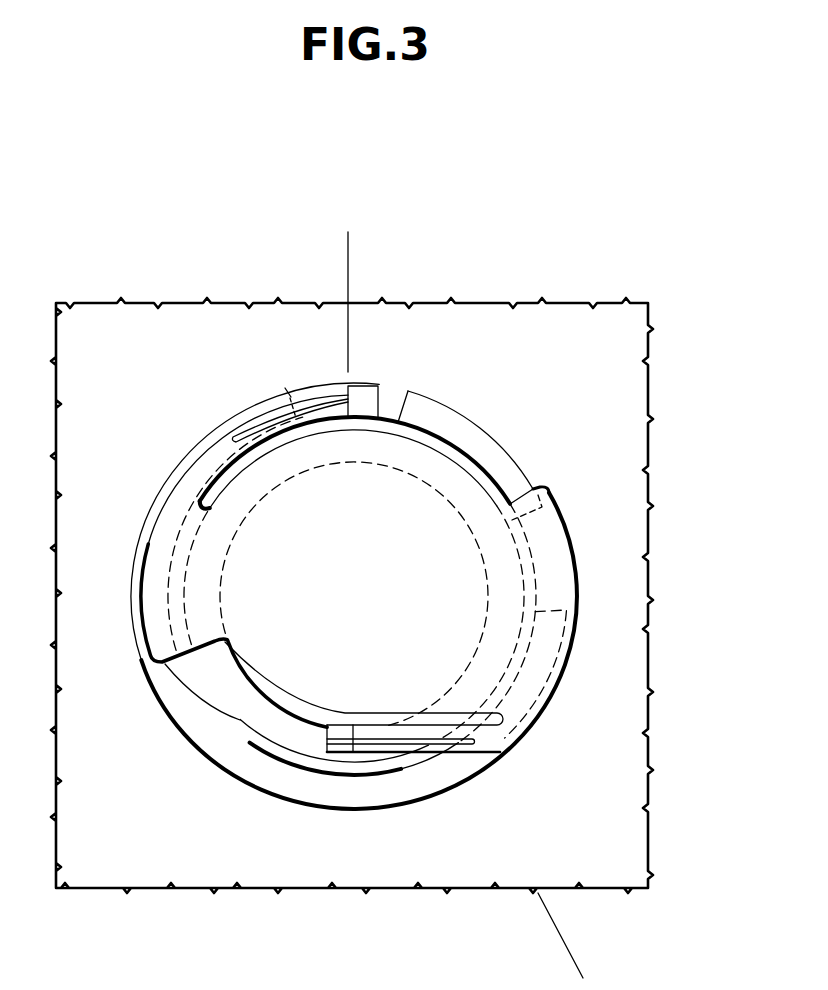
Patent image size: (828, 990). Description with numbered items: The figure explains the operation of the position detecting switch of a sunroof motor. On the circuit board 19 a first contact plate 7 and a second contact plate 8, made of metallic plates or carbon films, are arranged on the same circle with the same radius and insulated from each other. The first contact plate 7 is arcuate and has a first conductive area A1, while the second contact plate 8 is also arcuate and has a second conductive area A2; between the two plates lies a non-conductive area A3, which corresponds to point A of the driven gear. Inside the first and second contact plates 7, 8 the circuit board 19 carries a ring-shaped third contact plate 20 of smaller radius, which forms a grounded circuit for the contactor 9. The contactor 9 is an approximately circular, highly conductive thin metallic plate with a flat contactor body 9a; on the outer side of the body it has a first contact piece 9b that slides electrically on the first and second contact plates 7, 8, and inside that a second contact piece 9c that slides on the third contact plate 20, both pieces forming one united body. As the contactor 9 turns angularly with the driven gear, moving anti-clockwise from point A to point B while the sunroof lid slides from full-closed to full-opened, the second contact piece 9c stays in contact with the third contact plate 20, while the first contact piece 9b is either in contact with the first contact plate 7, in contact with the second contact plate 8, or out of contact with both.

The first contact plate 7 is at (347, 752).
The second contact plate 8 is at (518, 480).
The contactor 9 is at (578, 565).
The contactor body 9a is at (472, 582).
The first contact piece 9b is at (365, 386).
The second contact piece 9c is at (354, 752).
The circuit board 19 is at (581, 318).
The third contact plate 20 is at (293, 750).
The first conductive area A1 is at (212, 748).
The second conductive area A2 is at (446, 412).
The non-conductive area A3 is at (392, 396).
The point A is at (350, 235).
The point B is at (576, 963).